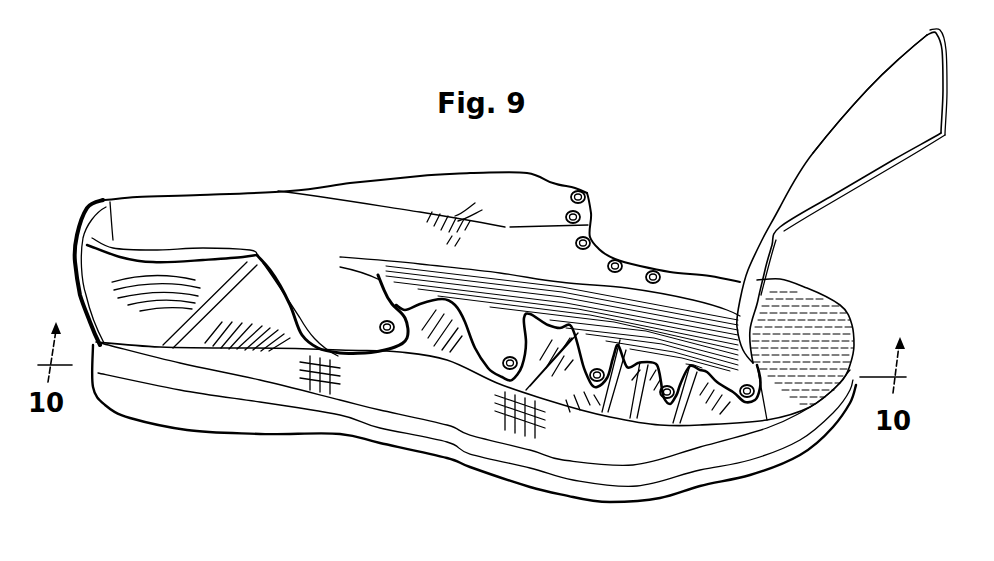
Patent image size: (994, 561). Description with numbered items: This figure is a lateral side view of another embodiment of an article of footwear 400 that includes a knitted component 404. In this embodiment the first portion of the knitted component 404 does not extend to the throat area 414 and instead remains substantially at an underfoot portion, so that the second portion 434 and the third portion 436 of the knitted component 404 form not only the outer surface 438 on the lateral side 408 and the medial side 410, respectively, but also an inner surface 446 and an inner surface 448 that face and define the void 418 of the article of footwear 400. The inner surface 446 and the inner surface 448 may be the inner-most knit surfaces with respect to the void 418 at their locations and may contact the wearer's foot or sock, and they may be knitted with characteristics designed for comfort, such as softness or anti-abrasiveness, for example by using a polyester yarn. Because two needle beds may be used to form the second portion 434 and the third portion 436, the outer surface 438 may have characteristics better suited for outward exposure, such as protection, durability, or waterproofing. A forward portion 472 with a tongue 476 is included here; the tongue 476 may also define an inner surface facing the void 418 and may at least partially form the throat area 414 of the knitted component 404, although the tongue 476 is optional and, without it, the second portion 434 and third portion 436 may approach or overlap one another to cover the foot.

The article of footwear 400 is at (209, 134).
The knitted component 404 is at (470, 181).
The lateral side 408 is at (437, 408).
The medial side 410 is at (608, 252).
The throat area 414 is at (829, 198).
The void 418 is at (329, 220).
The second portion 434 is at (302, 335).
The third portion 436 is at (552, 195).
The outer surface 438 is at (613, 380).
The inner surface 446 is at (315, 294).
The inner surface 448 is at (425, 193).
The forward portion 472 is at (806, 194).
The tongue 476 is at (880, 113).